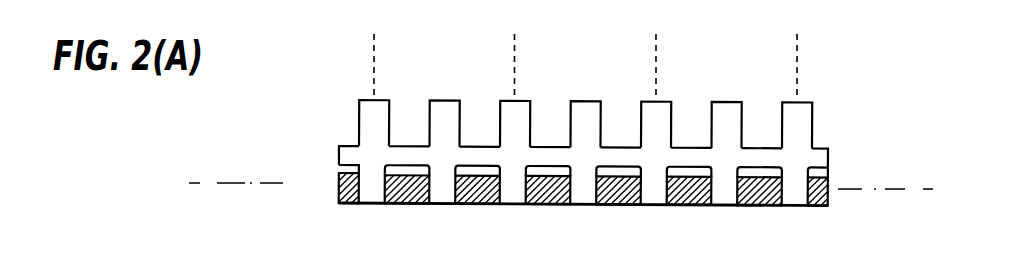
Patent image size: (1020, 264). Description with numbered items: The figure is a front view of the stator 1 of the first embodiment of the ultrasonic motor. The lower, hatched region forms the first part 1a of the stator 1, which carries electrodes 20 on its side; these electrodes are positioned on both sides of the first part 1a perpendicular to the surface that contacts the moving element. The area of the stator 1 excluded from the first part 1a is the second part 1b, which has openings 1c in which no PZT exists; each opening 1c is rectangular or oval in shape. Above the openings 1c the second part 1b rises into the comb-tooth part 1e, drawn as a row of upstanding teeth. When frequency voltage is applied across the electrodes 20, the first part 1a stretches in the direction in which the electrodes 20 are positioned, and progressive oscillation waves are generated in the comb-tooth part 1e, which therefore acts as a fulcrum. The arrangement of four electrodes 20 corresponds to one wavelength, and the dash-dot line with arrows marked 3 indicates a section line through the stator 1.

The stator 1 is at (570, 160).
The first part 1a is at (567, 208).
The second part 1b is at (557, 119).
The opening 1c is at (480, 168).
The comb-tooth part 1e is at (444, 106).
The section line 3 is at (209, 178).
The electrodes 20 is at (410, 183).